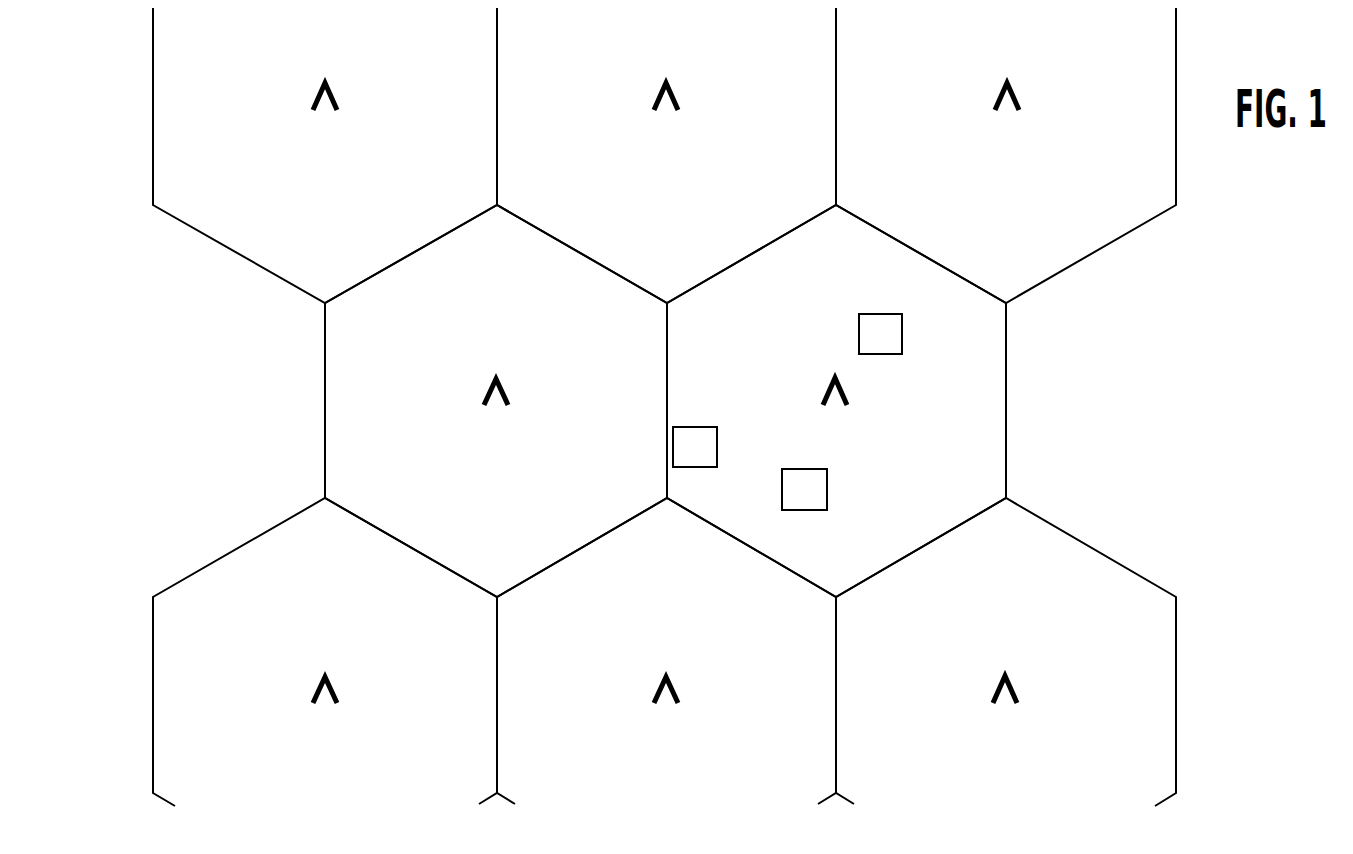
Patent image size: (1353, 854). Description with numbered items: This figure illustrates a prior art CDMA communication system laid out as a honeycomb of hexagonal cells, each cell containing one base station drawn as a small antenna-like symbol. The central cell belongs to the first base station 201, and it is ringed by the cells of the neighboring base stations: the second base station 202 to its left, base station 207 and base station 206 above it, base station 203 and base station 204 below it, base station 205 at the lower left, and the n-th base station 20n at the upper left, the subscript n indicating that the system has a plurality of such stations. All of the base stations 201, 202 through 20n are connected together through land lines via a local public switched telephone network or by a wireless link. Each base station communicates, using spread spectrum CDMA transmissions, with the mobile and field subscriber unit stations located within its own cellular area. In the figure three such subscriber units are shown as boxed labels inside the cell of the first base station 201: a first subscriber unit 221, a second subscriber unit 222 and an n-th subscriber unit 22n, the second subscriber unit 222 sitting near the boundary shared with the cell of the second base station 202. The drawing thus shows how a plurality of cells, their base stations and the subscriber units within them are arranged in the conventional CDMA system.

The base station 20n is at (325, 155).
The base station 207 is at (666, 155).
The base station 206 is at (1006, 155).
The base station 202 is at (496, 401).
The base station 201 is at (836, 401).
The base station 205 is at (334, 652).
The base station 203 is at (675, 651).
The base station 204 is at (1006, 652).
The mobile and field subscriber unit station 22n is at (880, 334).
The mobile and field subscriber unit station 222 is at (695, 447).
The mobile and field subscriber unit station 221 is at (804, 489).